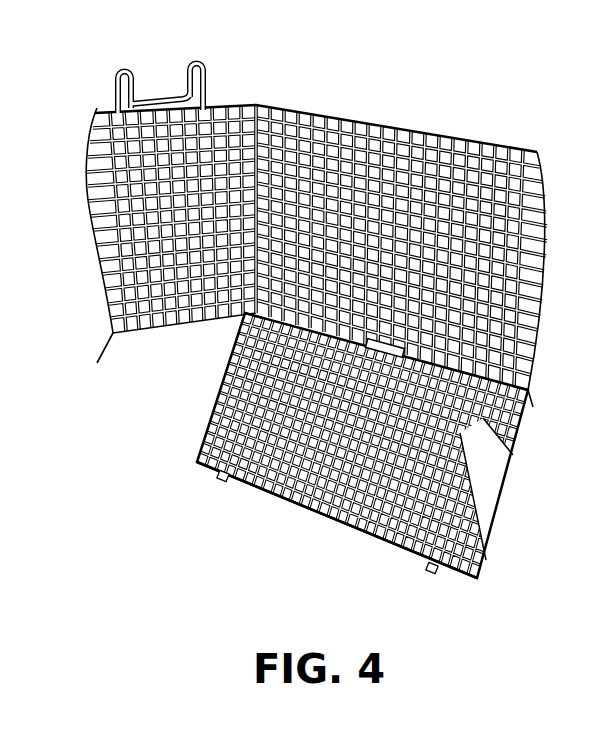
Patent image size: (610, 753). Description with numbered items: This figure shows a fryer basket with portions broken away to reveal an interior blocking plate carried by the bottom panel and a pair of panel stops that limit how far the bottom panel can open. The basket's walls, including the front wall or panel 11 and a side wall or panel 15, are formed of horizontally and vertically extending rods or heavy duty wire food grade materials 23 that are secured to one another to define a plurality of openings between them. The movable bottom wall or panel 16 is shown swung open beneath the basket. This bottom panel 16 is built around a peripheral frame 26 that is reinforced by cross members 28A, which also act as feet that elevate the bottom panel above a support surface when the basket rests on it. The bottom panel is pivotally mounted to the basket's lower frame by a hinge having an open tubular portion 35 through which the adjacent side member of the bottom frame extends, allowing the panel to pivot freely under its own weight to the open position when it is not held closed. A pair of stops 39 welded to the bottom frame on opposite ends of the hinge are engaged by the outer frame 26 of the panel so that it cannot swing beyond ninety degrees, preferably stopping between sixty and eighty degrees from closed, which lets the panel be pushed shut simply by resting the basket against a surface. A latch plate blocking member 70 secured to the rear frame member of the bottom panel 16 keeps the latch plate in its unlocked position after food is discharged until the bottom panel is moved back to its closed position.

The front wall or panel 11 is at (298, 236).
The side wall or panel 15 is at (423, 142).
The rods or heavy duty wire food grade materials 23 is at (113, 195).
The bottom wall or panel 16 is at (373, 479).
The peripheral frame 26 is at (370, 545).
The cross members 28A is at (222, 481).
The open tubular portion 35 is at (520, 340).
The stops 39 is at (243, 358).
The latch plate blocking member 70 is at (493, 475).